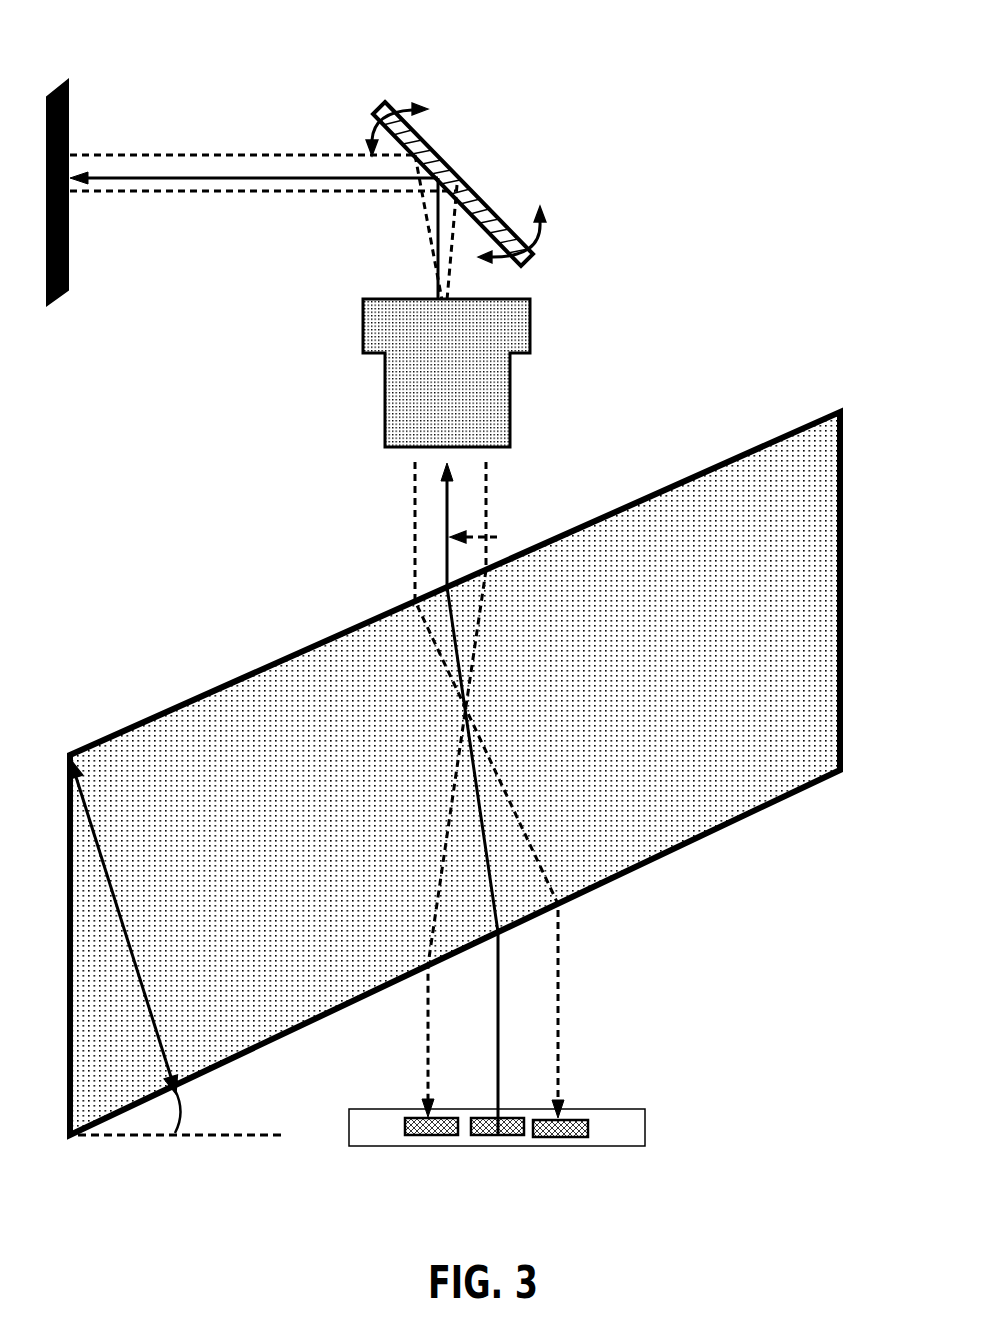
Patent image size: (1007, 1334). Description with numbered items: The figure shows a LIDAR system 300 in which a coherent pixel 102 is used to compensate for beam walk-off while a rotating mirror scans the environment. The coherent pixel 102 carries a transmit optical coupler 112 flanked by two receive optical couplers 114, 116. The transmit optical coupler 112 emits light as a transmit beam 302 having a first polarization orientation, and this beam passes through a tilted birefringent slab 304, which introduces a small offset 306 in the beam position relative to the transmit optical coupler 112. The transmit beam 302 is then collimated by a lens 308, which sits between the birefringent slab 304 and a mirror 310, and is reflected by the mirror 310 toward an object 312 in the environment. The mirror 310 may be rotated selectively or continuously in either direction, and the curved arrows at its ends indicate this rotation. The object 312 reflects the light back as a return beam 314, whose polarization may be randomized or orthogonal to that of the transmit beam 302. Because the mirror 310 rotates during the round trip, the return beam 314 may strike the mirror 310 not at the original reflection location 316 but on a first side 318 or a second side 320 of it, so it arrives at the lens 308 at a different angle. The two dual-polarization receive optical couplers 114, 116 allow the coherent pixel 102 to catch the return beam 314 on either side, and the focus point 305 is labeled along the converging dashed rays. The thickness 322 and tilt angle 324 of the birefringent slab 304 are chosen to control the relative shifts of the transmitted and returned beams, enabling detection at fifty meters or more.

The LIDAR system 300 is at (588, 24).
The transmit beam 302 is at (362, 618).
The birefringent slab 304 is at (455, 760).
The focal point 305 is at (385, 220).
The offset 306 is at (544, 495).
The lens 308 is at (494, 373).
The mirror 310 is at (535, 218).
The object 312 is at (110, 188).
The return beam 314 is at (349, 585).
The location 316 is at (455, 179).
The first side 318 is at (498, 179).
The second side 320 is at (437, 105).
The thickness 322 is at (168, 927).
The angle 324 is at (193, 1108).
The coherent pixel 102 is at (566, 1130).
The transmit optical coupler 112 is at (527, 1157).
The receive optical coupler 114 is at (392, 1151).
The receive optical coupler 116 is at (618, 1156).